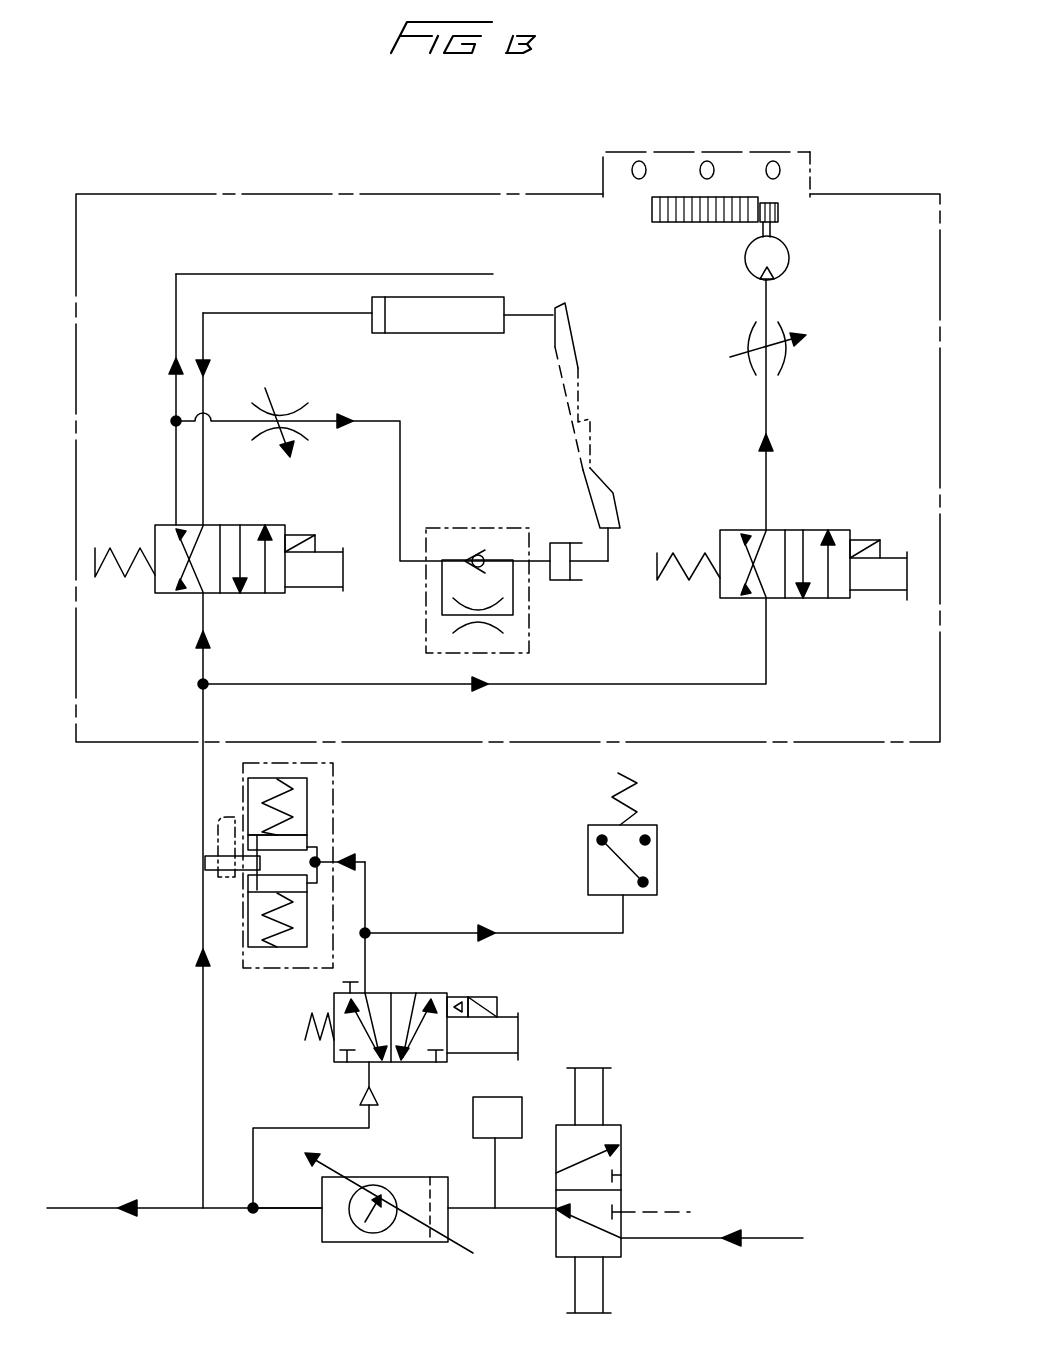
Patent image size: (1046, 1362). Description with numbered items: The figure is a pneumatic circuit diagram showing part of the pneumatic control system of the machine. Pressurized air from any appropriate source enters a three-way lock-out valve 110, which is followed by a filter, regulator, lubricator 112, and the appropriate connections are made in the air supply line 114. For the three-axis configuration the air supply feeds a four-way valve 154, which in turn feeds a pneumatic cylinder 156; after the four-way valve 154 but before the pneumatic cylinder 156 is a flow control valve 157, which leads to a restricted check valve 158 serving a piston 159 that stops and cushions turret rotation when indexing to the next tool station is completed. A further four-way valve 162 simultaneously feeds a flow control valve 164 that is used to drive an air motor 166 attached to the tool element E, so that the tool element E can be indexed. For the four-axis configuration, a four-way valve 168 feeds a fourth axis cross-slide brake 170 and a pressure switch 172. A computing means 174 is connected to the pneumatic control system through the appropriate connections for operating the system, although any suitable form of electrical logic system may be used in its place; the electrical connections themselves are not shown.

The three-way lock-out valve 110 is at (630, 1130).
The filter, regulator, lubricator 112 is at (406, 1178).
The air supply line 114 is at (303, 1211).
The four-way valve 154 is at (276, 530).
The pneumatic cylinder 156 is at (495, 300).
The flow control valve 157 is at (285, 405).
The restricted check valve 158 is at (510, 528).
The piston 159 is at (556, 582).
The four-way valve 162 is at (812, 530).
The flow control valve 164 is at (778, 363).
The air motor 166 is at (781, 258).
The four-way valve 168 is at (516, 1003).
The fourth axis cross-slide brake 170 is at (337, 805).
The pressure switch 172 is at (651, 853).
The computing means 174 is at (472, 1105).
The tool element E is at (578, 360).